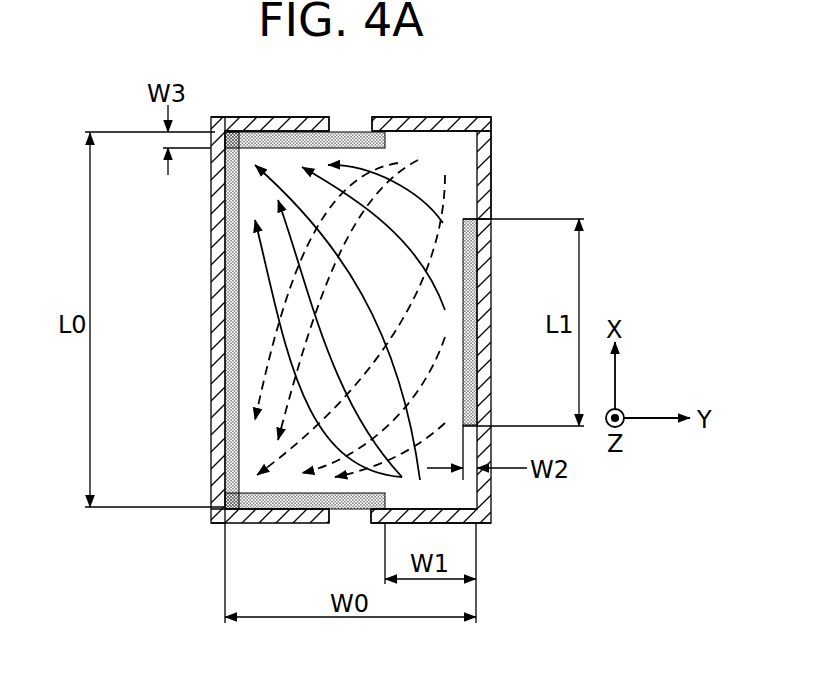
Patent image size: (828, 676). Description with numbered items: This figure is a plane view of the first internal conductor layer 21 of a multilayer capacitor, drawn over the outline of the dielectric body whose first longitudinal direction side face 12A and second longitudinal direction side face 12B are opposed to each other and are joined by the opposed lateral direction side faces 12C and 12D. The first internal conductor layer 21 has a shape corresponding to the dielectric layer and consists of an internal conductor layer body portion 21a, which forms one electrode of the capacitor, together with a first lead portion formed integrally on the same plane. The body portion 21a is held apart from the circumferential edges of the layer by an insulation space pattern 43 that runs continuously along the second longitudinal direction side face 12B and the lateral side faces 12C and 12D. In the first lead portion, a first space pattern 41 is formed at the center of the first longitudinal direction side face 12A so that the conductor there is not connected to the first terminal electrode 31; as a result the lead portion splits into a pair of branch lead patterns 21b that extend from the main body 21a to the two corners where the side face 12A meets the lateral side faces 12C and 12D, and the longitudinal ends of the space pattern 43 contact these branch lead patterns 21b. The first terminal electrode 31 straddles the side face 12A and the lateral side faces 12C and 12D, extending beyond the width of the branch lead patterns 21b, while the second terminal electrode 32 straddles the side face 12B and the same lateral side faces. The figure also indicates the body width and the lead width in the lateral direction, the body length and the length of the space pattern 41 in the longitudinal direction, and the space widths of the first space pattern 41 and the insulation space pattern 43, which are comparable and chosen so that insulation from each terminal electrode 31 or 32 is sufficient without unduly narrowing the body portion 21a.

The first longitudinal direction side face 12A is at (490, 143).
The second longitudinal direction side face 12B is at (222, 408).
The lateral direction side face 12C is at (342, 523).
The lateral direction side face 12D is at (357, 133).
The first internal conductor layer 21 is at (453, 200).
The internal conductor layer body portion 21a is at (258, 322).
The branch lead pattern 21b is at (442, 168).
The first terminal electrode 31 is at (485, 190).
The second terminal electrode 32 is at (222, 257).
The first space pattern 41 is at (468, 371).
The insulation space pattern 43 is at (273, 117).